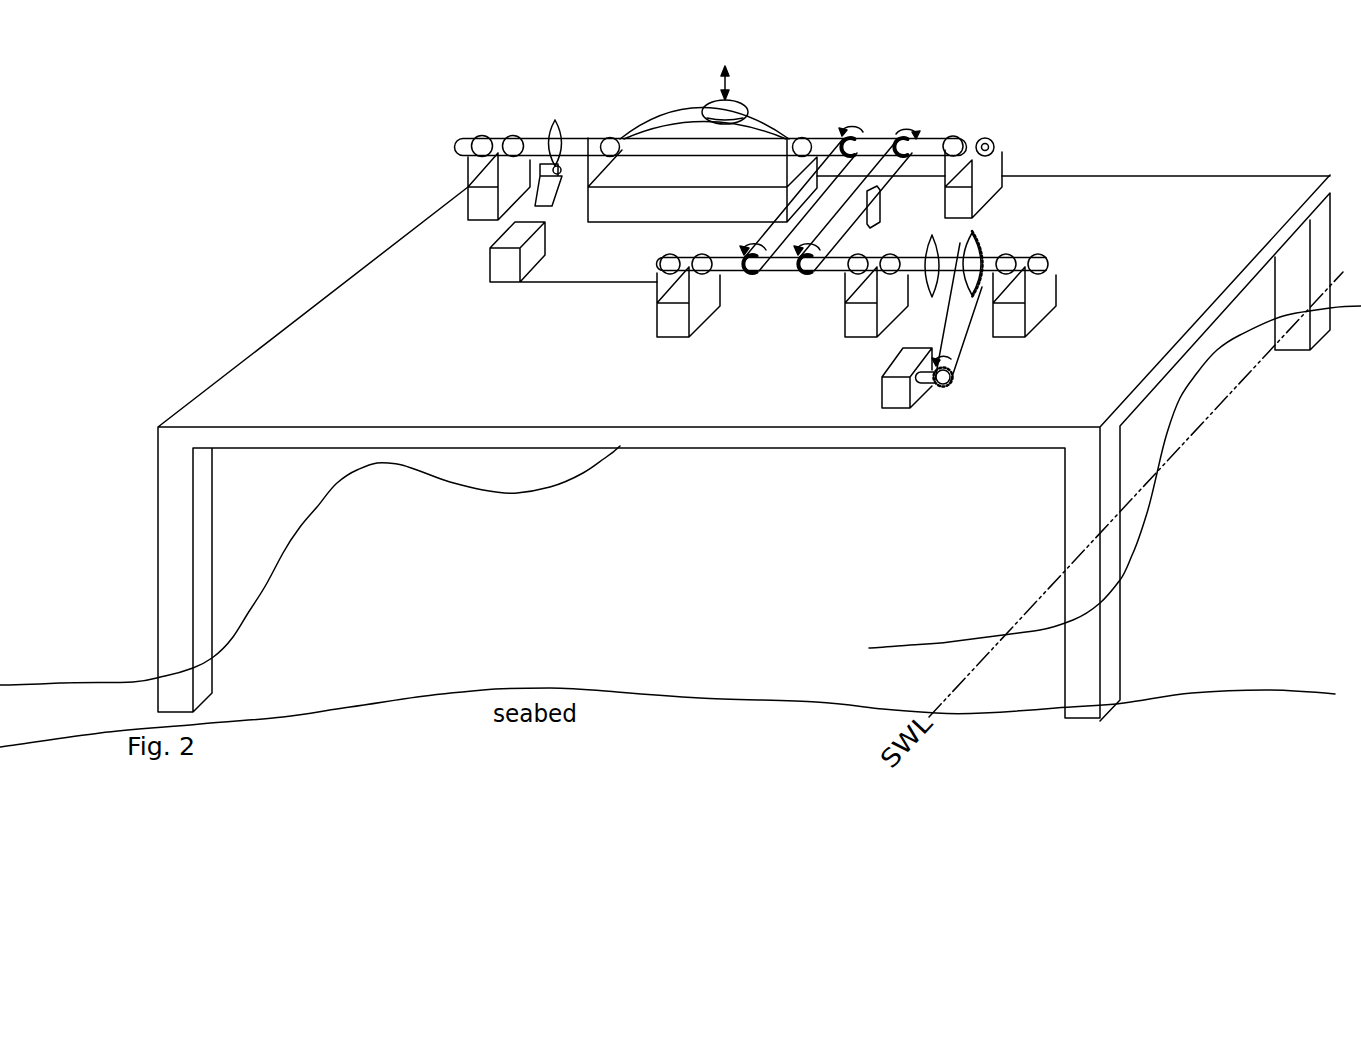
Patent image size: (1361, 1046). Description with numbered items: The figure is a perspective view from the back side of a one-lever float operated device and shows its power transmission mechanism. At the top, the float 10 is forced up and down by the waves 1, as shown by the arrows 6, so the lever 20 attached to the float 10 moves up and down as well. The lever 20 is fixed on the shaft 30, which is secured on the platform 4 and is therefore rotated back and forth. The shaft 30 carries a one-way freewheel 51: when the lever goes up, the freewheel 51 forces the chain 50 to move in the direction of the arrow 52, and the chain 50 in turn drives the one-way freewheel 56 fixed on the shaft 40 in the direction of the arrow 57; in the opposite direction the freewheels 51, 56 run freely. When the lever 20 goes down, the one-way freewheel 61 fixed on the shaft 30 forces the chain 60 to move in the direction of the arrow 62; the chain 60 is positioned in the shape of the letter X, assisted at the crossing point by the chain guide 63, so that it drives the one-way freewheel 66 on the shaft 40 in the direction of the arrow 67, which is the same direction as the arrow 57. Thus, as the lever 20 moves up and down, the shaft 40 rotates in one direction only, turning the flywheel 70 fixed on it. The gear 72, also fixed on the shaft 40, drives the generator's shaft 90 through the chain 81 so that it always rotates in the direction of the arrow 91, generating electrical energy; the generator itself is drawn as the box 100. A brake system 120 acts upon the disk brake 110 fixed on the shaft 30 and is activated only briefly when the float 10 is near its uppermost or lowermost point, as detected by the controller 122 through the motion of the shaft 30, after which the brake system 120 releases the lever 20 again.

The waves 1 is at (1347, 311).
The platform 4 is at (252, 350).
The arrows 6 is at (722, 70).
The float 10 is at (748, 108).
The lever 20 is at (662, 128).
The shaft 30 is at (453, 145).
The shaft 40 is at (672, 263).
The chain 50 is at (836, 147).
The one-way freewheel 51 is at (860, 138).
The arrow 52 is at (848, 128).
The one-way freewheel 56 is at (752, 277).
The arrow 57 is at (733, 258).
The chain 60 is at (891, 178).
The one-way freewheel 61 is at (915, 139).
The arrow 62 is at (899, 133).
The chain guide 63 is at (874, 224).
The one-way freewheel 66 is at (807, 273).
The arrow 67 is at (785, 258).
The flywheel 70 is at (932, 297).
The gear 72 is at (990, 247).
The chain 81 is at (972, 332).
The generator's shaft 90 is at (950, 390).
The arrow 91 is at (955, 358).
The generator 100 is at (881, 397).
The disk brake 110 is at (555, 120).
The brake system 120 is at (561, 166).
The controller 122 is at (490, 268).